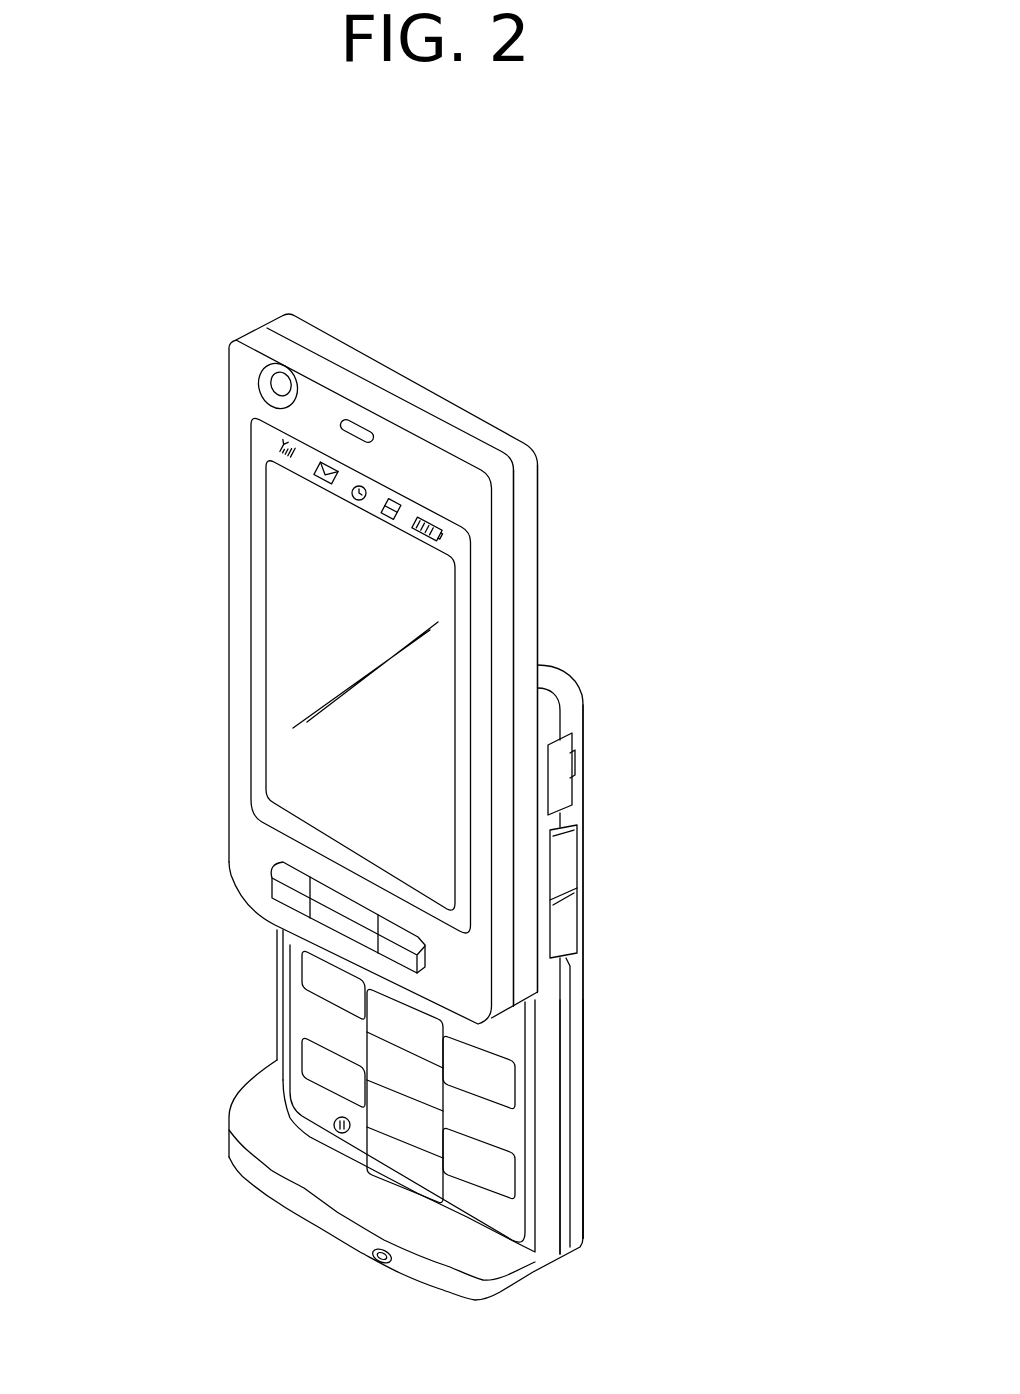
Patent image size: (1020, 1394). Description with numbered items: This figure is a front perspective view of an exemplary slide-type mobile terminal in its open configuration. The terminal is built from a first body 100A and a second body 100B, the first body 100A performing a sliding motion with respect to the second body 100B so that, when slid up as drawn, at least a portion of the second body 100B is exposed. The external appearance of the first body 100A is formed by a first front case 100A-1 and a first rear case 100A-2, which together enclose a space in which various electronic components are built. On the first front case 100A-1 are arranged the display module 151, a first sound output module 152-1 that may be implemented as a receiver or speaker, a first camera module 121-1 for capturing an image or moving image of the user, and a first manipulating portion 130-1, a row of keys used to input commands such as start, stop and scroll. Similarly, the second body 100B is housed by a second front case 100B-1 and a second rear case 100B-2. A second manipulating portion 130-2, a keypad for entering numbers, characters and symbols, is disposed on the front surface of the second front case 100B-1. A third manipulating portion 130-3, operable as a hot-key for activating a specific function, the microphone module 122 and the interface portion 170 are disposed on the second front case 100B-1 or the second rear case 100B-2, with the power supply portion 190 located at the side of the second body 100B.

The first body 100A is at (193, 473).
The first front case 100A-1 is at (503, 562).
The first rear case 100A-2 is at (528, 518).
The second body 100B is at (268, 1006).
The second front case 100B-1 is at (548, 703).
The second rear case 100B-2 is at (577, 730).
The first camera module 121-1 is at (278, 388).
The microphone module 122 is at (380, 1262).
The first manipulating portion 130-1 is at (280, 887).
The second manipulating portion 130-2 is at (310, 1068).
The third manipulating portion 130-3 is at (568, 922).
The display module 151 is at (283, 615).
The first sound output module 152-1 is at (358, 427).
The interface portion 170 is at (565, 767).
The power supply portion 190 is at (577, 1082).